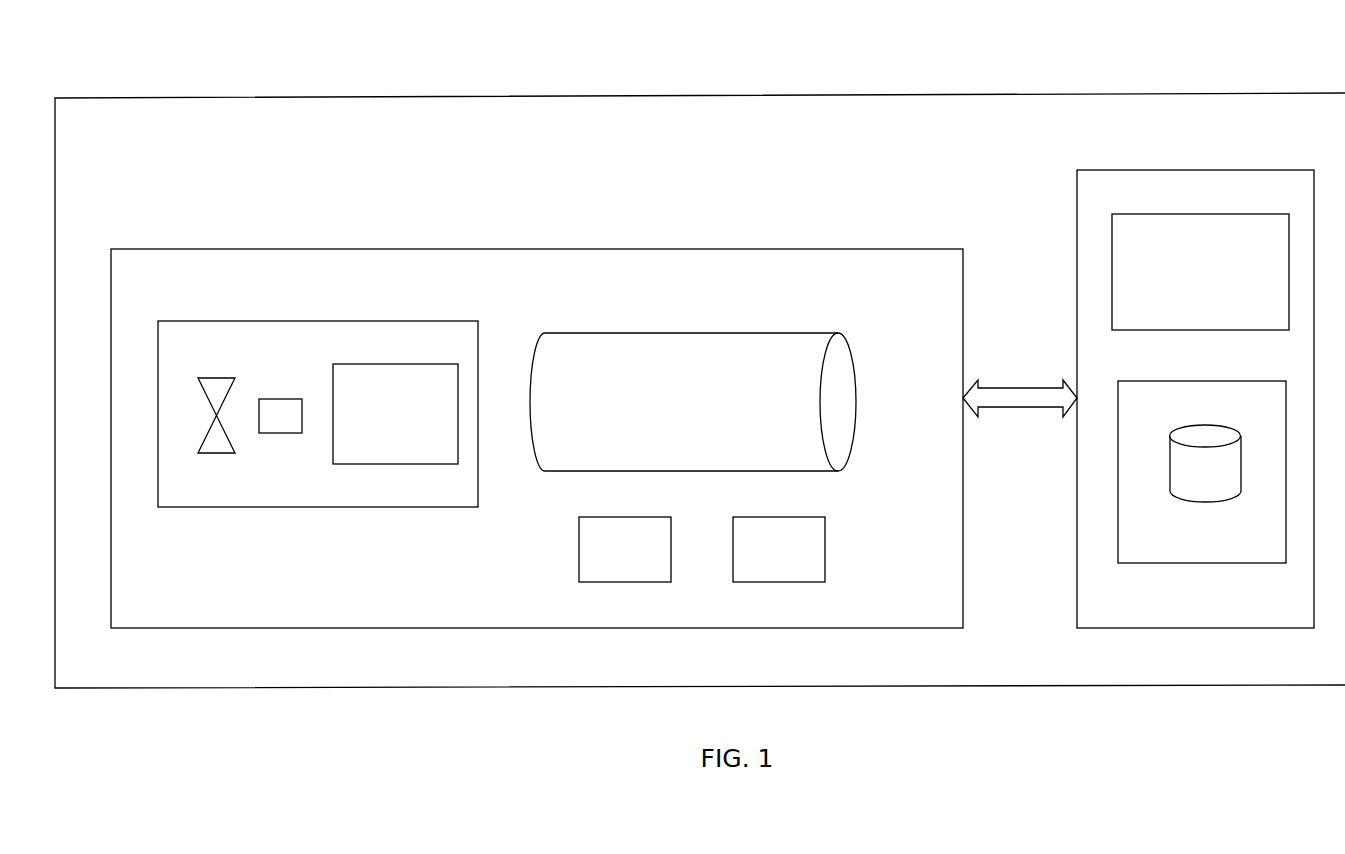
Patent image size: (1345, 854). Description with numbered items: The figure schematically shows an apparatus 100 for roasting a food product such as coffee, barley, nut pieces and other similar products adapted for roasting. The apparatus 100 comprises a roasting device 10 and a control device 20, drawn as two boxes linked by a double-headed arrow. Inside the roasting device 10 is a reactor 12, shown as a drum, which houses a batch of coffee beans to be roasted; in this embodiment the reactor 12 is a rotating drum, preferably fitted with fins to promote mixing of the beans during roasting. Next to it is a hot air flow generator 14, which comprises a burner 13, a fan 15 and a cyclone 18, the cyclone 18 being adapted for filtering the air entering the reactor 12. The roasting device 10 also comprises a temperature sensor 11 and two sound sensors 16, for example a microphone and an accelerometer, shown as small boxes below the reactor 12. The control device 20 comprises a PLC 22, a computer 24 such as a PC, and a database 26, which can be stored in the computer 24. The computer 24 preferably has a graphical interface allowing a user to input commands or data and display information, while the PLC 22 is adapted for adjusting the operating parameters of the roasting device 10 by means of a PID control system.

The apparatus 100 is at (649, 95).
The roasting device 10 is at (637, 243).
The hot air flow generator 14 is at (296, 322).
The fan 15 is at (212, 453).
The cyclone 18 is at (287, 428).
The burner 13 is at (372, 442).
The reactor 12 is at (687, 332).
The sound sensors 16 is at (625, 549).
The temperature sensor 11 is at (779, 549).
The control device 20 is at (1180, 166).
The PLC 22 is at (1113, 258).
The computer 24 is at (1120, 528).
The database 26 is at (1206, 463).